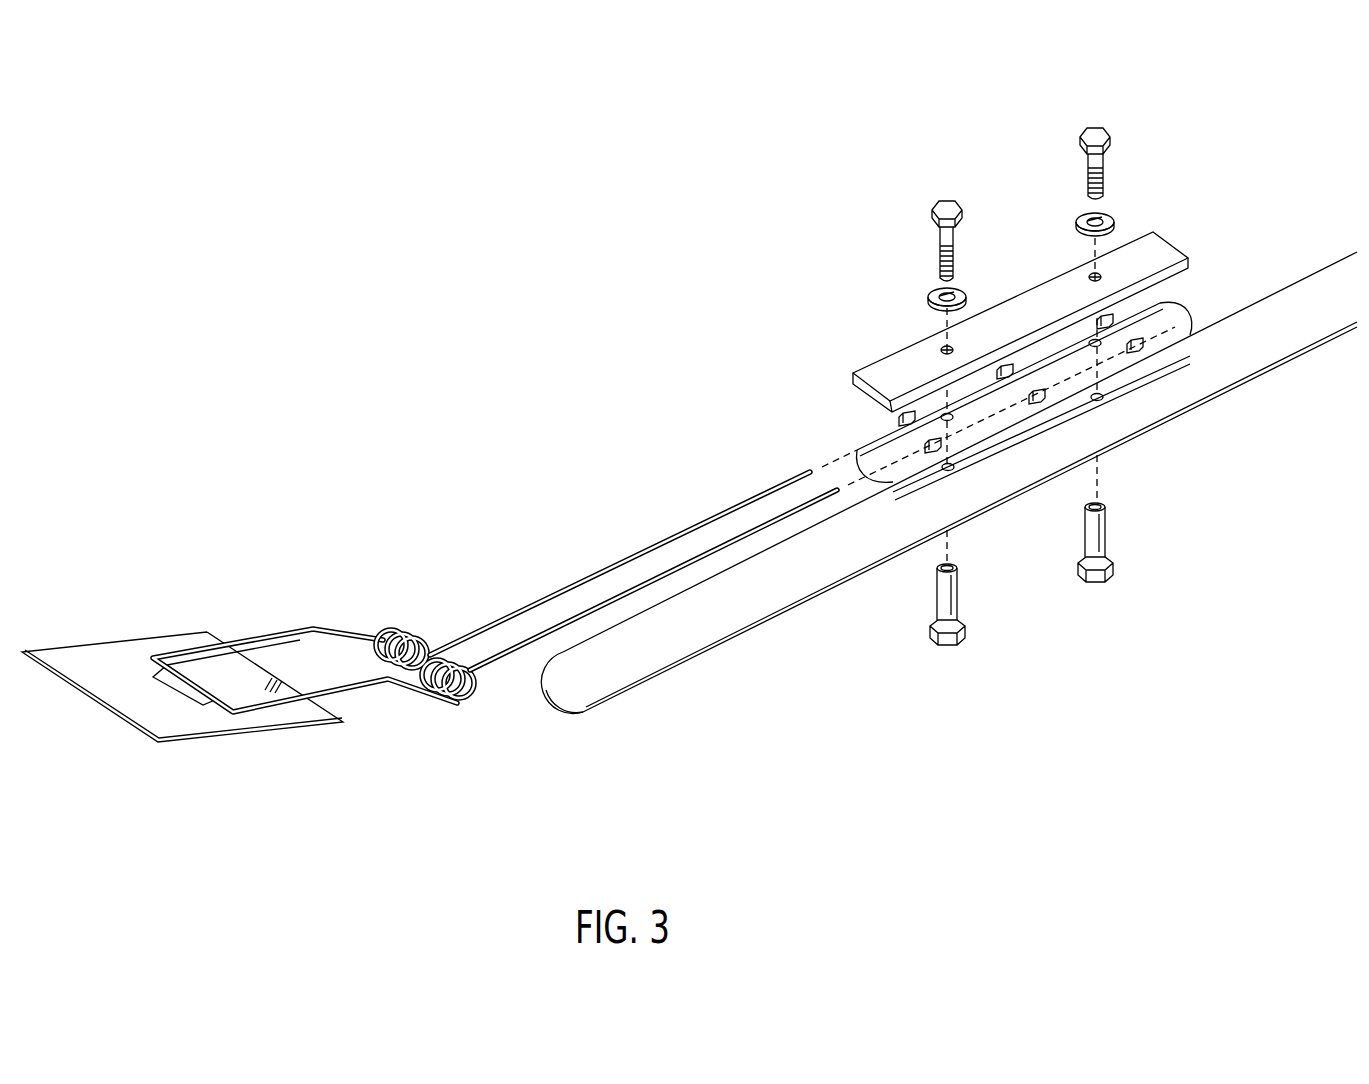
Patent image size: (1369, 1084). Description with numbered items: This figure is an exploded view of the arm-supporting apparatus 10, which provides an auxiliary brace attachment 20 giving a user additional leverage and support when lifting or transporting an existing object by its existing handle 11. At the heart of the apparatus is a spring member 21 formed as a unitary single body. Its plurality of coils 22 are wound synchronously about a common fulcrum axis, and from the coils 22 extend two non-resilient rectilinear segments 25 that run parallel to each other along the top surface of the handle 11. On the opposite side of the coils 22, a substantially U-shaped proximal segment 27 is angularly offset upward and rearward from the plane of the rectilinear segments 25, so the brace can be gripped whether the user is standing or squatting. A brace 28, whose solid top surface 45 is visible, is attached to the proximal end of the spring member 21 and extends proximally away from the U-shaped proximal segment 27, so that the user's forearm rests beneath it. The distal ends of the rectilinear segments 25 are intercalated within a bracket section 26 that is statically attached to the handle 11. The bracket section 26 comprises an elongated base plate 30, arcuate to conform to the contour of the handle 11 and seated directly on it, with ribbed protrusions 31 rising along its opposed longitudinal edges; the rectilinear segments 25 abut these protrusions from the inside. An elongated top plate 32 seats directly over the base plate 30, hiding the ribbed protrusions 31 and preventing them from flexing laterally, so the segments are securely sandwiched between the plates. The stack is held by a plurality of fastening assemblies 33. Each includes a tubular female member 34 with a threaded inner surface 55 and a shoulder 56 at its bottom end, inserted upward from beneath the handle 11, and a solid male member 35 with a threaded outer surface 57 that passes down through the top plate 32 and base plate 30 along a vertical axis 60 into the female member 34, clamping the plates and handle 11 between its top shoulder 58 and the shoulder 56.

The arm-supporting apparatus 10 is at (205, 290).
The existing handle 11 is at (623, 667).
The auxiliary brace attachment 20 is at (633, 357).
The spring member 21 is at (442, 640).
The coils 22 is at (405, 632).
The rectilinear segments 25 is at (678, 535).
The bracket section 26 is at (1024, 234).
The U-shaped proximal segment 27 is at (258, 630).
The brace 28 is at (72, 647).
The base plate 30 is at (1045, 353).
The ribbed protrusions 31 is at (897, 423).
The top plate 32 is at (1034, 303).
The fastening assemblies 33 is at (1024, 201).
The tubular female member 34 is at (1034, 565).
The solid male member 35 is at (1000, 169).
The top surface 45 is at (122, 665).
The threaded inner surface 55 is at (957, 567).
The shoulder 56 is at (927, 607).
The threaded outer surface 57 is at (933, 266).
The top shoulder 58 is at (1117, 148).
The vertical axis 60 is at (1108, 257).